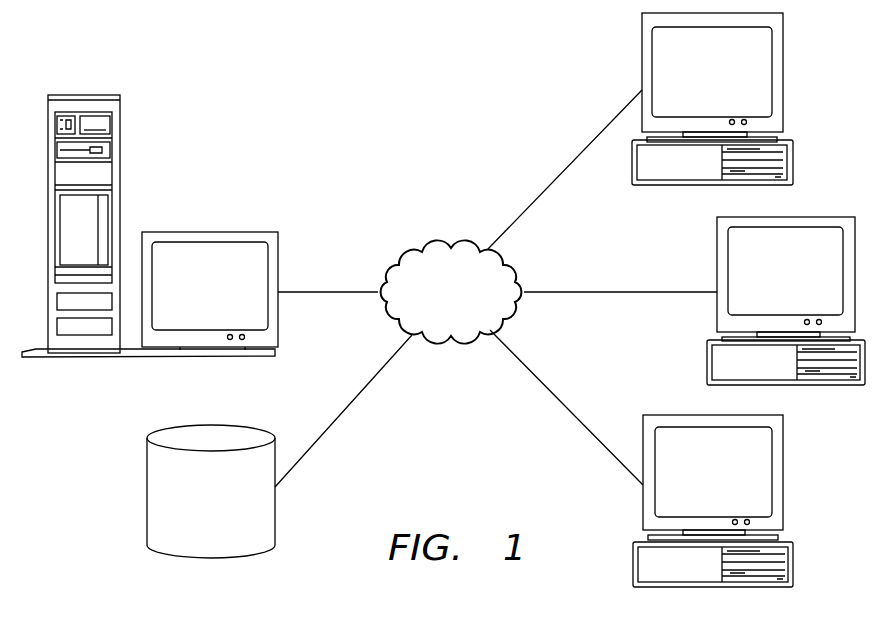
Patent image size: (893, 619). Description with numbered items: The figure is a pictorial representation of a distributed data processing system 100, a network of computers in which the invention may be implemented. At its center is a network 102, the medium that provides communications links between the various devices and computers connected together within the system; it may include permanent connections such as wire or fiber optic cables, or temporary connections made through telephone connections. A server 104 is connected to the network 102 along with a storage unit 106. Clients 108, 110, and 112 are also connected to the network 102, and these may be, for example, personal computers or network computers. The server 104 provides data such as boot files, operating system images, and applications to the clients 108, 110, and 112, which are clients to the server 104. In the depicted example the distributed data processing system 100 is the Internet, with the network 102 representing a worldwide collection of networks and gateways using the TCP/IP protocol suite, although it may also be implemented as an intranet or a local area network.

The distributed data processing system 100 is at (345, 65).
The network 102 is at (431, 303).
The server 104 is at (190, 296).
The storage unit 106 is at (192, 512).
The client 108 is at (692, 85).
The client 110 is at (767, 285).
The client 112 is at (695, 487).